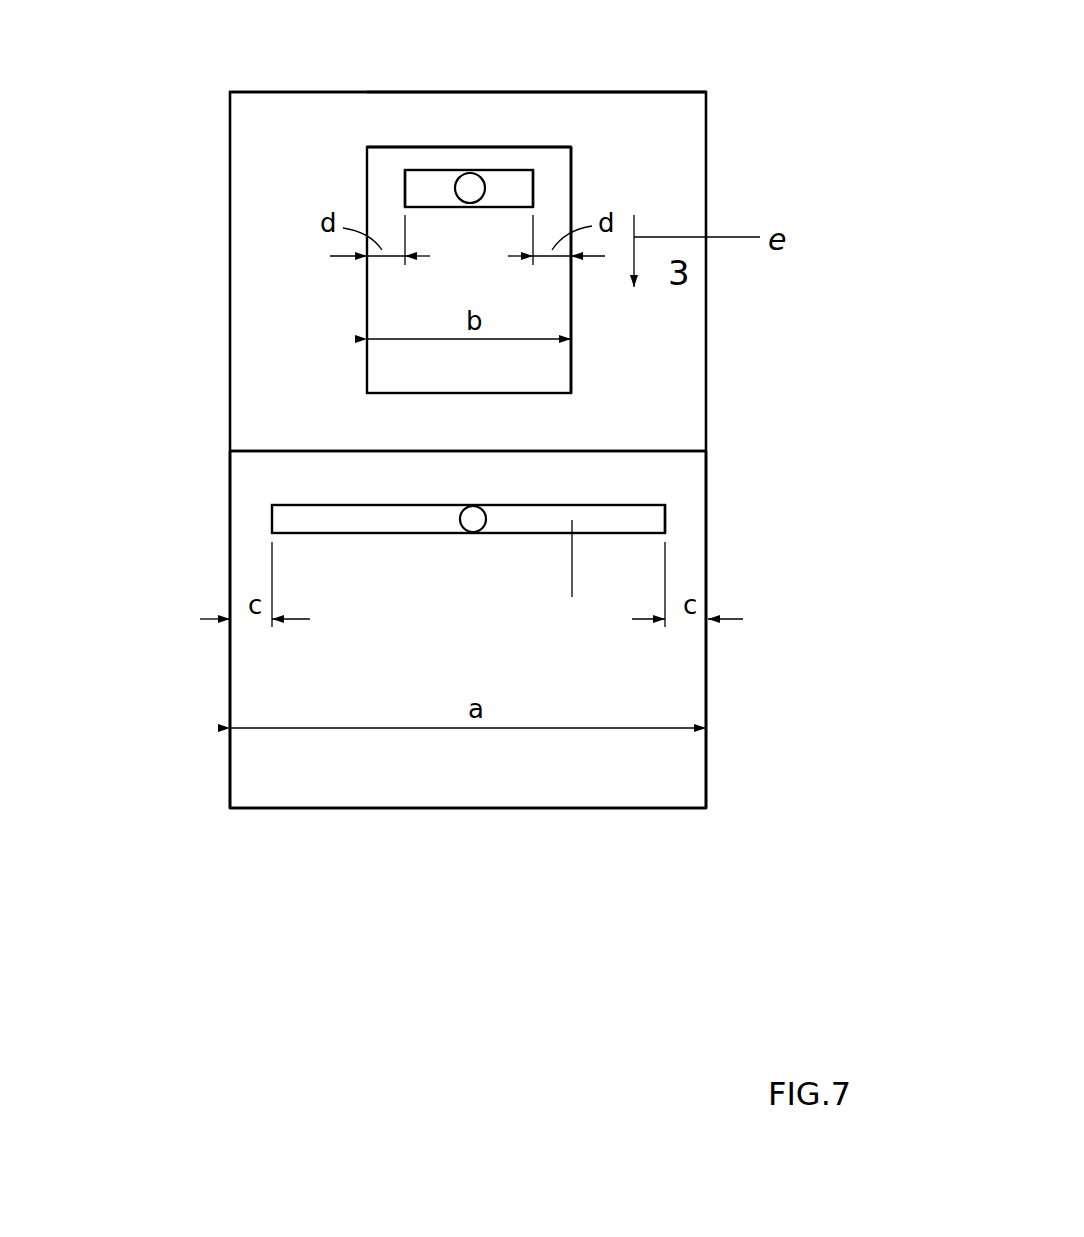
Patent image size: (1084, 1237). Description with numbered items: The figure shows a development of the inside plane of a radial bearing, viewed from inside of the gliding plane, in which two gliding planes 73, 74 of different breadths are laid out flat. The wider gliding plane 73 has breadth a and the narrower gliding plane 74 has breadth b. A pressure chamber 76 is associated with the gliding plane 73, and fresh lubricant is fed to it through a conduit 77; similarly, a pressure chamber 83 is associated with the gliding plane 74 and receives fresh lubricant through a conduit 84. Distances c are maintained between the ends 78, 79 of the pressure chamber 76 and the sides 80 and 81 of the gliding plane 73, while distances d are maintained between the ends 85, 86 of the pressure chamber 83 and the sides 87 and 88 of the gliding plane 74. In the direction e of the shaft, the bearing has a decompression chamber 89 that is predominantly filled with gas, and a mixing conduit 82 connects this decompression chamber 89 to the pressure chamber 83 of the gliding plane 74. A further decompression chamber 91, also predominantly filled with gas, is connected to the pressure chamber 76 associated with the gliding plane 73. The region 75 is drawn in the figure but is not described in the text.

The gliding plane 73 is at (650, 777).
The gliding plane 74 is at (545, 313).
The lower plate portion 75 is at (638, 477).
The pressure chamber 76 is at (573, 583).
The conduit 77 is at (473, 535).
The end of pressure chamber 78 is at (272, 518).
The end of pressure chamber 79 is at (665, 525).
The side of gliding plane 80 is at (230, 662).
The side of gliding plane 81 is at (708, 672).
The mixing conduit 82 is at (552, 162).
The pressure chamber 83 is at (428, 183).
The conduit 84 is at (468, 183).
The end of pressure chamber 85 is at (533, 190).
The end of pressure chamber 86 is at (405, 188).
The side of gliding plane 87 is at (367, 295).
The side of gliding plane 88 is at (575, 165).
The decompression chamber 89 is at (562, 110).
The decompression chamber 91 is at (302, 410).